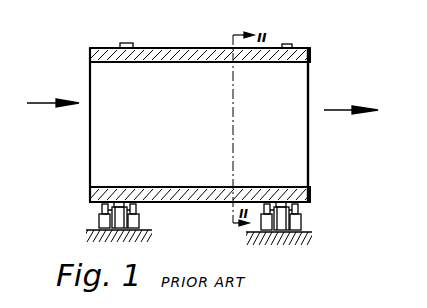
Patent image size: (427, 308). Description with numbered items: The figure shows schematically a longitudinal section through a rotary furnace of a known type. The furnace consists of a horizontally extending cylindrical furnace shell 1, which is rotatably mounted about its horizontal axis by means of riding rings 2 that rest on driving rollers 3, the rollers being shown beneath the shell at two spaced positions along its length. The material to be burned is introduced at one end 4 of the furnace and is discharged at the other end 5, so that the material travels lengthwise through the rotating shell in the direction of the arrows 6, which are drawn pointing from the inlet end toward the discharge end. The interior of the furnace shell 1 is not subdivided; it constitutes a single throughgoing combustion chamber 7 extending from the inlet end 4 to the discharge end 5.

The furnace shell 1 is at (133, 62).
The riding rings 2 is at (120, 44).
The driving rollers 3 is at (283, 222).
The one end 4 is at (90, 152).
The other end 5 is at (310, 148).
The arrows 6 is at (38, 103).
The combustion chamber 7 is at (290, 168).